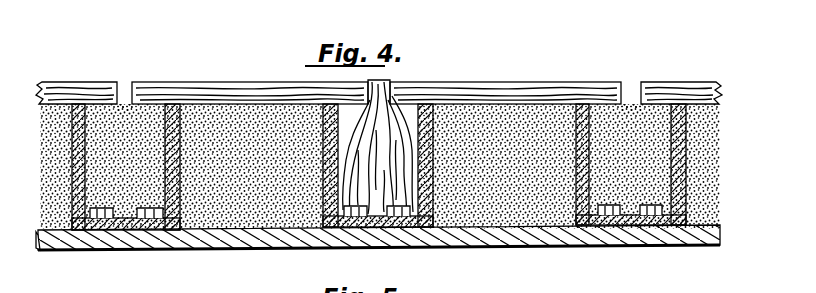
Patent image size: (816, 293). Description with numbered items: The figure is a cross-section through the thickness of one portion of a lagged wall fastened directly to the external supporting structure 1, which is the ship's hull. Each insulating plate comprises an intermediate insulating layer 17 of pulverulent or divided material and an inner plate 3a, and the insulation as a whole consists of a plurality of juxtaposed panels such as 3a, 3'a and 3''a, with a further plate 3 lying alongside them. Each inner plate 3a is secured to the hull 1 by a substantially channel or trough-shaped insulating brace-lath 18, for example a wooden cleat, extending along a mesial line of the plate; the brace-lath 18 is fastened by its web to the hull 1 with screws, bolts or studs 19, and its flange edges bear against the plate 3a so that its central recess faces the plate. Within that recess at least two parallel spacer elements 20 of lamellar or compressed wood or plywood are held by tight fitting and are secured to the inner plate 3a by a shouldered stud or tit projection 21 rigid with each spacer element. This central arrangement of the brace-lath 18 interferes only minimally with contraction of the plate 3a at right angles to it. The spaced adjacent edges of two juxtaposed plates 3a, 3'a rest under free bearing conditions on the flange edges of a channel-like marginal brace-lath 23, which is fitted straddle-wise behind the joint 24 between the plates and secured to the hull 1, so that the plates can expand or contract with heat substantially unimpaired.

The supporting structure 1 is at (257, 252).
The plate 3 is at (505, 69).
The inner plate 3a is at (217, 90).
The adjacent plate 3'a is at (681, 76).
The juxtaposed panel 3''a is at (76, 77).
The intermediate insulating layer 17 is at (238, 217).
The brace-lath 18 is at (323, 110).
The screws 19 is at (139, 218).
The spacer element 20 is at (339, 214).
The shouldered stud 21 is at (389, 97).
The marginal brace-lath 23 is at (175, 218).
The joint 24 is at (125, 88).